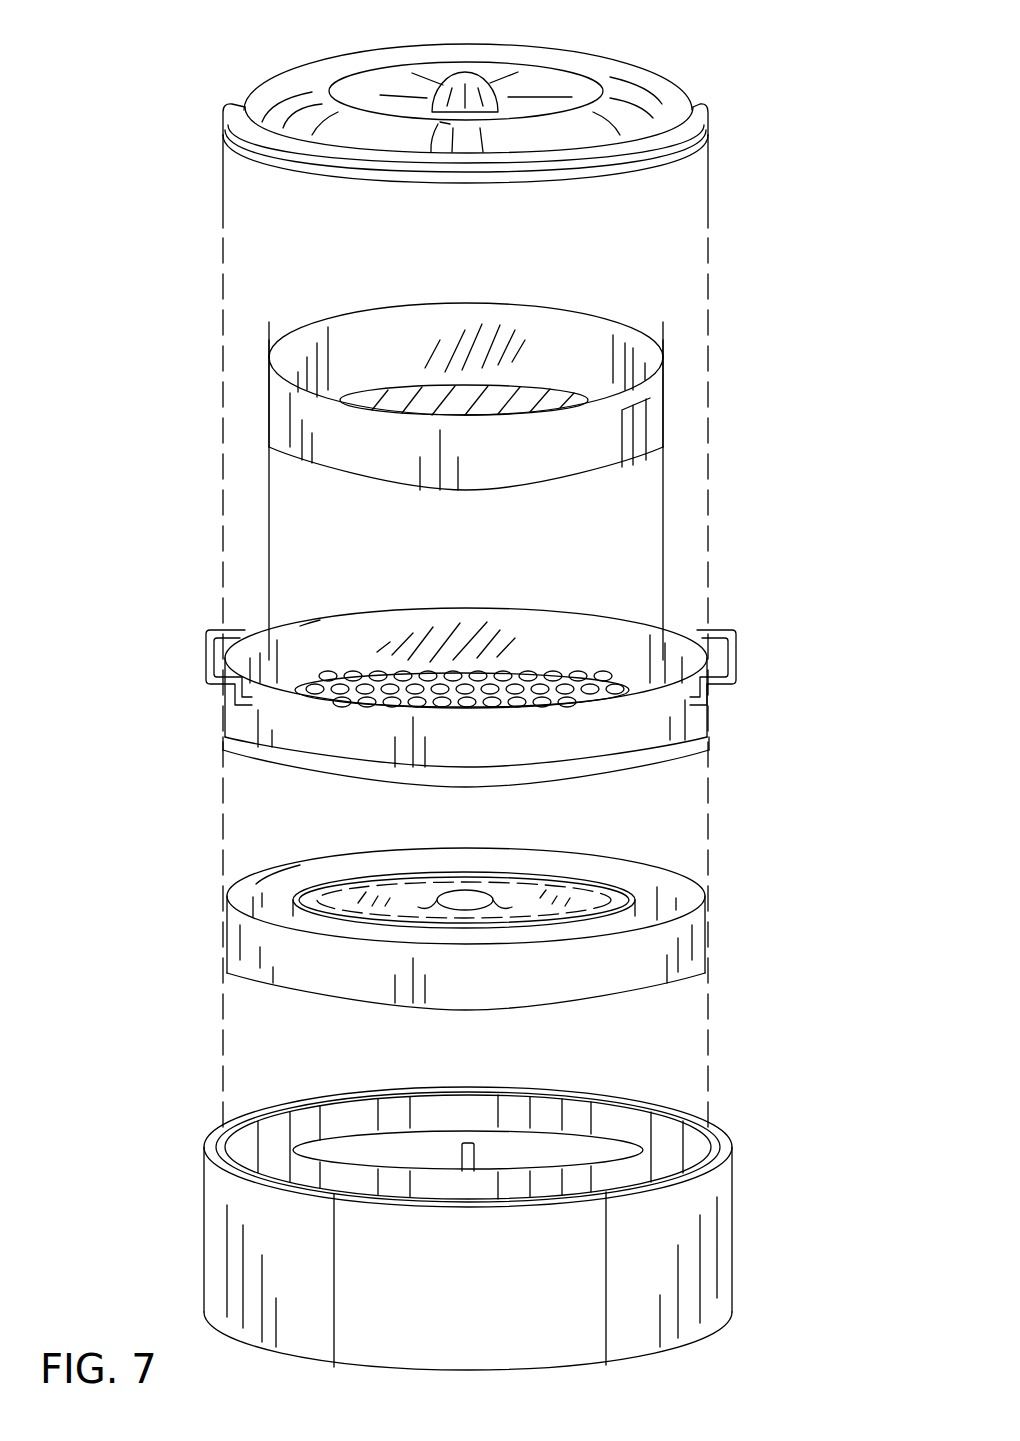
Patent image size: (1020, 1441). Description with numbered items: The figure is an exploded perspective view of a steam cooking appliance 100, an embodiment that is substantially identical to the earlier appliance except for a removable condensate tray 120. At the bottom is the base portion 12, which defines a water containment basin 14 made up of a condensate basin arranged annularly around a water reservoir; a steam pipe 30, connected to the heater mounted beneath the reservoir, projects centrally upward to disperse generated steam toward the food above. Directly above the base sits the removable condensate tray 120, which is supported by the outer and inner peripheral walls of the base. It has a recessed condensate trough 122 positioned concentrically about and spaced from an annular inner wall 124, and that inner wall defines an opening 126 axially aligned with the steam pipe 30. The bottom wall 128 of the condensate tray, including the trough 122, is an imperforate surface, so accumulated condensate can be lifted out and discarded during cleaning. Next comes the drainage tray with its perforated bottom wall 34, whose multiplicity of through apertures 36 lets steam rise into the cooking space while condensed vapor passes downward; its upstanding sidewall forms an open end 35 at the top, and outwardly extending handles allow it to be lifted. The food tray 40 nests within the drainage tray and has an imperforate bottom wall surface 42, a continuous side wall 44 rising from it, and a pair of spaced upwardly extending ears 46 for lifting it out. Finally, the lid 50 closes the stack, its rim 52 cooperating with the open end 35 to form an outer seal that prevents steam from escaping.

The steam cooking appliance 100 is at (203, 215).
The lid 50 is at (503, 94).
The rim 52 is at (655, 118).
The food tray 40 is at (470, 379).
The imperforate bottom wall surface 42 is at (495, 388).
The continuous side wall 44 is at (634, 405).
The upwardly extending ears 46 is at (268, 338).
The perforated bottom wall 34 is at (487, 687).
The open end 35 is at (308, 627).
The through apertures 36 is at (517, 678).
The removable condensate tray 120 is at (447, 910).
The recessed condensate trough 122 is at (283, 882).
The annular inner wall 124 is at (295, 927).
The opening 126 is at (470, 897).
The bottom wall 128 is at (642, 925).
The base portion 12 is at (528, 1204).
The water containment basin 14 is at (541, 1164).
The steam pipe 30 is at (470, 1143).